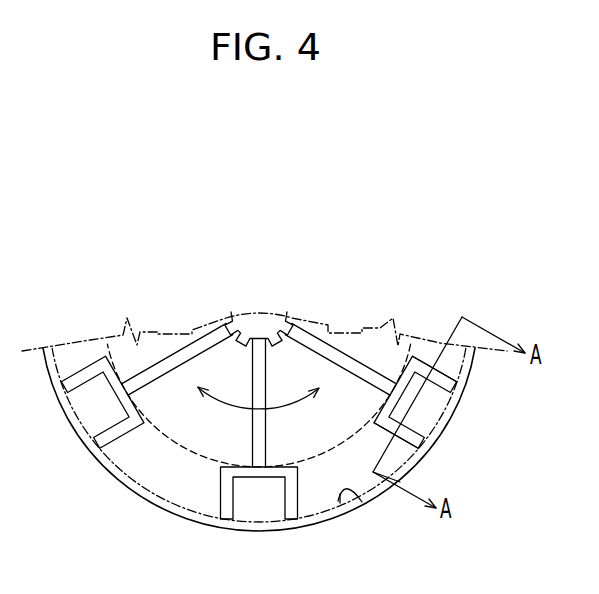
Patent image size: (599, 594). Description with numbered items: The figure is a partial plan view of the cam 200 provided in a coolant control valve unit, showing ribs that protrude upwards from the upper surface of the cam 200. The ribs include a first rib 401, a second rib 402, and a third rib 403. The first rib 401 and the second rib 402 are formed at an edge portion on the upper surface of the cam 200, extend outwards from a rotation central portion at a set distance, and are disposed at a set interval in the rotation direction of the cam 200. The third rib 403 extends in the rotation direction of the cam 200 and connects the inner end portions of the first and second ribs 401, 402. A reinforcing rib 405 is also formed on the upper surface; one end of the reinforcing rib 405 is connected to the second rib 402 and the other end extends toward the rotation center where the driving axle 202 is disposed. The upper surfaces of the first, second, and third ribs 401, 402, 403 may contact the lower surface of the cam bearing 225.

The cam 200 is at (117, 488).
The driving axle 202 is at (272, 315).
The cam bearing 225 is at (359, 500).
The first rib 401 is at (413, 433).
The second rib 402 is at (444, 374).
The third rib 403 is at (398, 370).
The reinforcing rib 405 is at (342, 362).